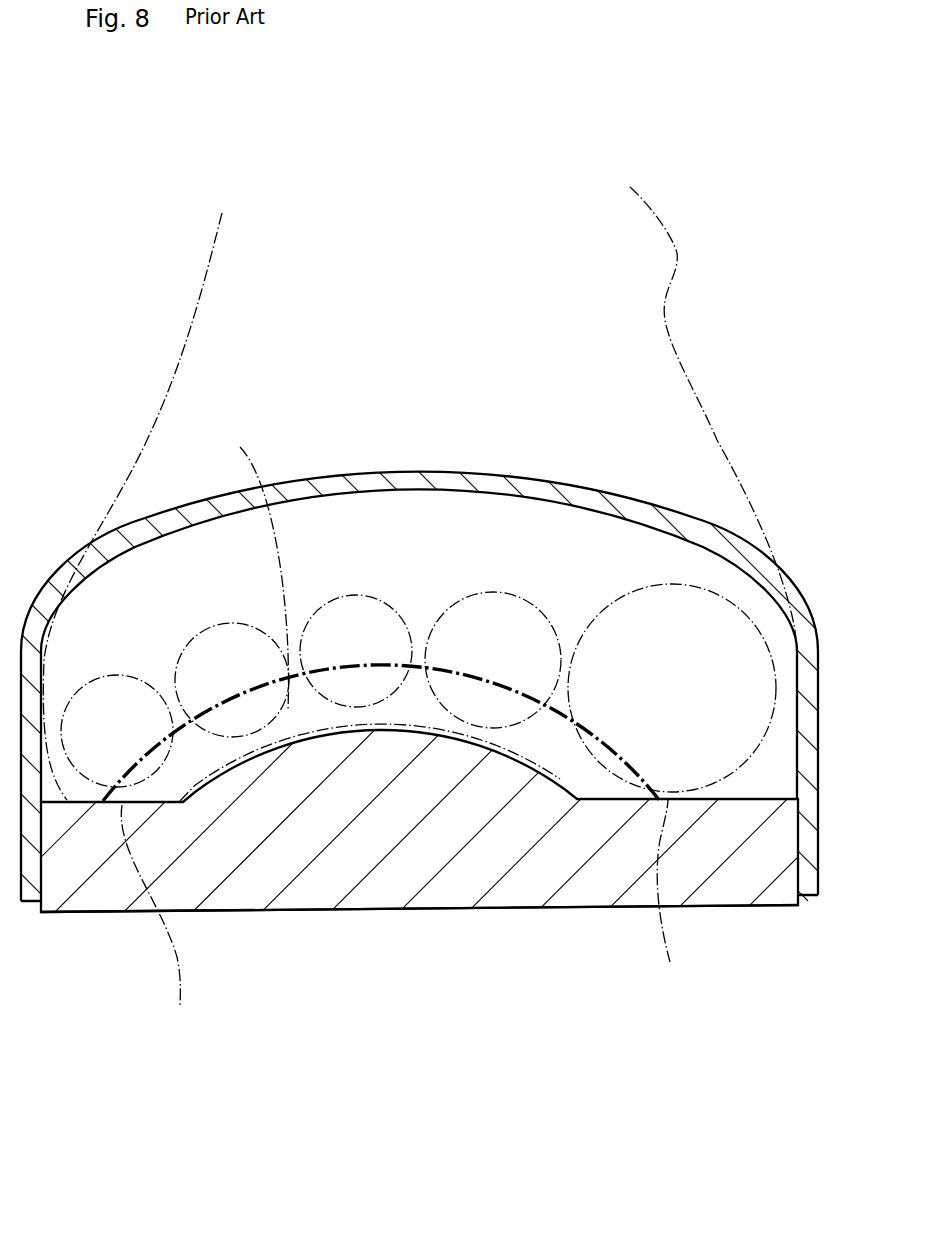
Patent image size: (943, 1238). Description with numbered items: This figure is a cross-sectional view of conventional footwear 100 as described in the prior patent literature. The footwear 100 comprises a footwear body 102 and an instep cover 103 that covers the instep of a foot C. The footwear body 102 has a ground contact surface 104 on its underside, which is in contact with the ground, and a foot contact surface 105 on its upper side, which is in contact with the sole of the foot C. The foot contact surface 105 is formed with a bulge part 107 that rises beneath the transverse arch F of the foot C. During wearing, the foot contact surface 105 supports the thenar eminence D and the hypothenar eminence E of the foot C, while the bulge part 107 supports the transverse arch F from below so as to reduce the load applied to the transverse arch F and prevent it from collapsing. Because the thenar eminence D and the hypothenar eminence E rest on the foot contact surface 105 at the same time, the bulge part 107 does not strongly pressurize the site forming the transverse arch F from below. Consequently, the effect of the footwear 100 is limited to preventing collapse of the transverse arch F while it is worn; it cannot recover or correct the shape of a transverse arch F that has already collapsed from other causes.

The footwear 100 is at (173, 253).
The footwear body 102 is at (297, 911).
The instep cover 103 is at (555, 480).
The ground contact surface 104 is at (440, 909).
The foot contact surface 105 is at (748, 800).
The bulge part 107 is at (410, 730).
The foot C is at (203, 317).
The thenar eminence D is at (670, 897).
The hypothenar eminence E is at (154, 922).
The transverse arch F is at (240, 447).